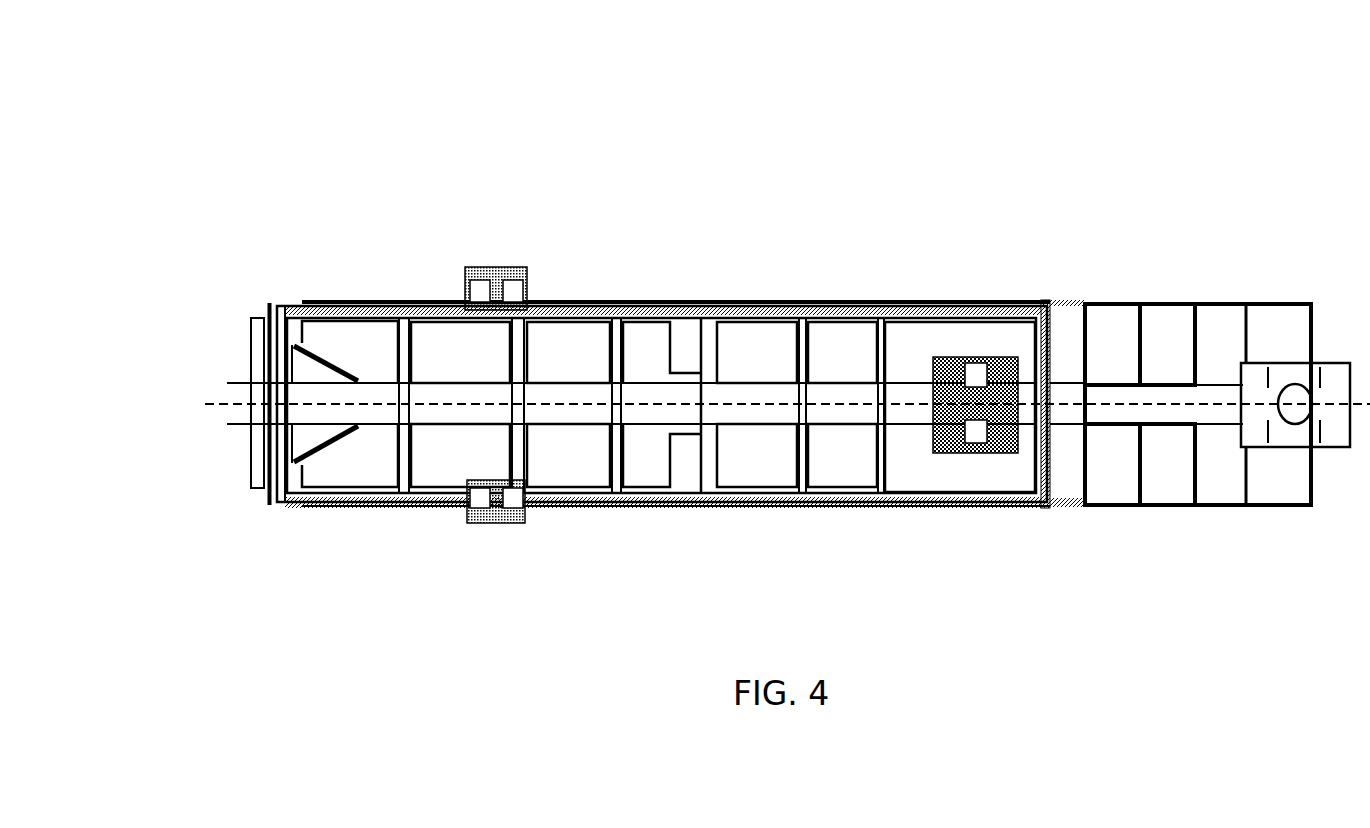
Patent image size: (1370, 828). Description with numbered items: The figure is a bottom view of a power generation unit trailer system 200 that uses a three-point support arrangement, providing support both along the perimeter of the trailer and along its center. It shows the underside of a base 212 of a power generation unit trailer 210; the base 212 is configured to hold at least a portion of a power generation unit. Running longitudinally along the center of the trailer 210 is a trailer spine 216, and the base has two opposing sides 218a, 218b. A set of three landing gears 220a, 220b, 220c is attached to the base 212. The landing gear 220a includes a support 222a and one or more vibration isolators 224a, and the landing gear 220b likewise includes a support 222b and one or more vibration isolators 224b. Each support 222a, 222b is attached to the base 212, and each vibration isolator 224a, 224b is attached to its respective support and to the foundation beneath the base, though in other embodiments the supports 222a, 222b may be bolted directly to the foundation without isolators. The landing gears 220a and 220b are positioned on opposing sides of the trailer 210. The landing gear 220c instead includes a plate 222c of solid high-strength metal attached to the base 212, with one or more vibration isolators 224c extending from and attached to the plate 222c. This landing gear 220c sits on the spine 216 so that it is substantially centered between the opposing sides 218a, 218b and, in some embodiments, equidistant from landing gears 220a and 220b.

The power generation unit trailer system 200 is at (1030, 132).
The power generation unit trailer 210 is at (869, 262).
The base 212 is at (207, 303).
The trailer spine 216 is at (893, 420).
The opposing side 218a is at (685, 509).
The opposing side 218b is at (667, 299).
The landing gear 220a is at (510, 542).
The landing gear 220b is at (500, 218).
The landing gear 220c is at (957, 470).
The support 222a is at (523, 517).
The support 222b is at (518, 268).
The plate 222c is at (1003, 370).
The vibration isolator 224a is at (507, 502).
The vibration isolator 224b is at (508, 285).
The vibration isolator 224c is at (977, 427).